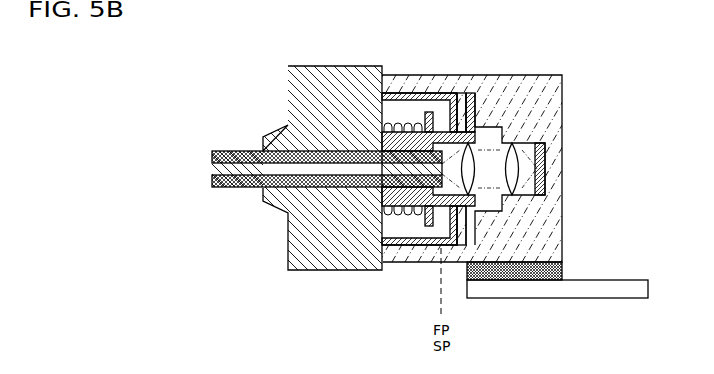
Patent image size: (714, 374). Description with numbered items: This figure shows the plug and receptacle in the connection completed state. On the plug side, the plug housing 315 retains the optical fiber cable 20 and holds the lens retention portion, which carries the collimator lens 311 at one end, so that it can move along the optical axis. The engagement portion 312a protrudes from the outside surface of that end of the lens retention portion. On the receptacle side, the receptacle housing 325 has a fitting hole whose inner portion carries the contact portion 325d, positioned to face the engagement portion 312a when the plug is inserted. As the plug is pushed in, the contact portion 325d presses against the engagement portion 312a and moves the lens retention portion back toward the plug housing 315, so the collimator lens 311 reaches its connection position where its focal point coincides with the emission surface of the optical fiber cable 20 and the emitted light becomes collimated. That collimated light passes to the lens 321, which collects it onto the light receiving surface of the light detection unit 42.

The optical fiber cable 20 is at (222, 151).
The plug housing 315 is at (283, 98).
The collimator lens 311 is at (452, 130).
The engagement portion 312a is at (458, 132).
The contact portion 325d is at (470, 102).
The lens 321 is at (512, 147).
The receptacle housing 325 is at (568, 157).
The light detection unit 42 is at (543, 172).